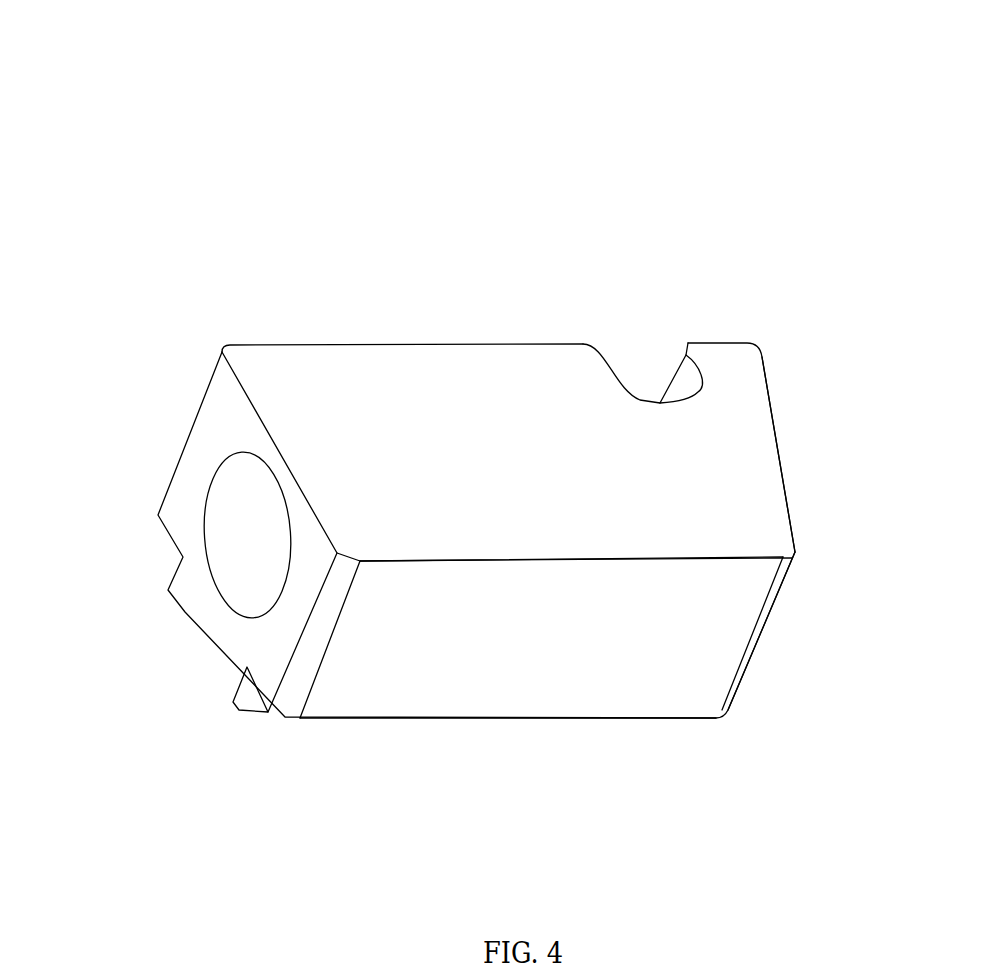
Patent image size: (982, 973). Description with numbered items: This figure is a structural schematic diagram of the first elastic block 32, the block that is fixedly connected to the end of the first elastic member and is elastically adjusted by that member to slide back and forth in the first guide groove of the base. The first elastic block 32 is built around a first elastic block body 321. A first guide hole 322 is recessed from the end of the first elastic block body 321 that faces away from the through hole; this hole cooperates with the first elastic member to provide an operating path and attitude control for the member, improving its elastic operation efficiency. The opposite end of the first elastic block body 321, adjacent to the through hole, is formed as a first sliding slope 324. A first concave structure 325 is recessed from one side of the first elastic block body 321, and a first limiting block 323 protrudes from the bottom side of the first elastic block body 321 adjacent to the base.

The first elastic block 32 is at (410, 57).
The first elastic block body 321 is at (490, 688).
The first guide hole 322 is at (230, 552).
The first limiting block 323 is at (243, 700).
The first sliding slope 324 is at (776, 442).
The first concave structure 325 is at (677, 375).